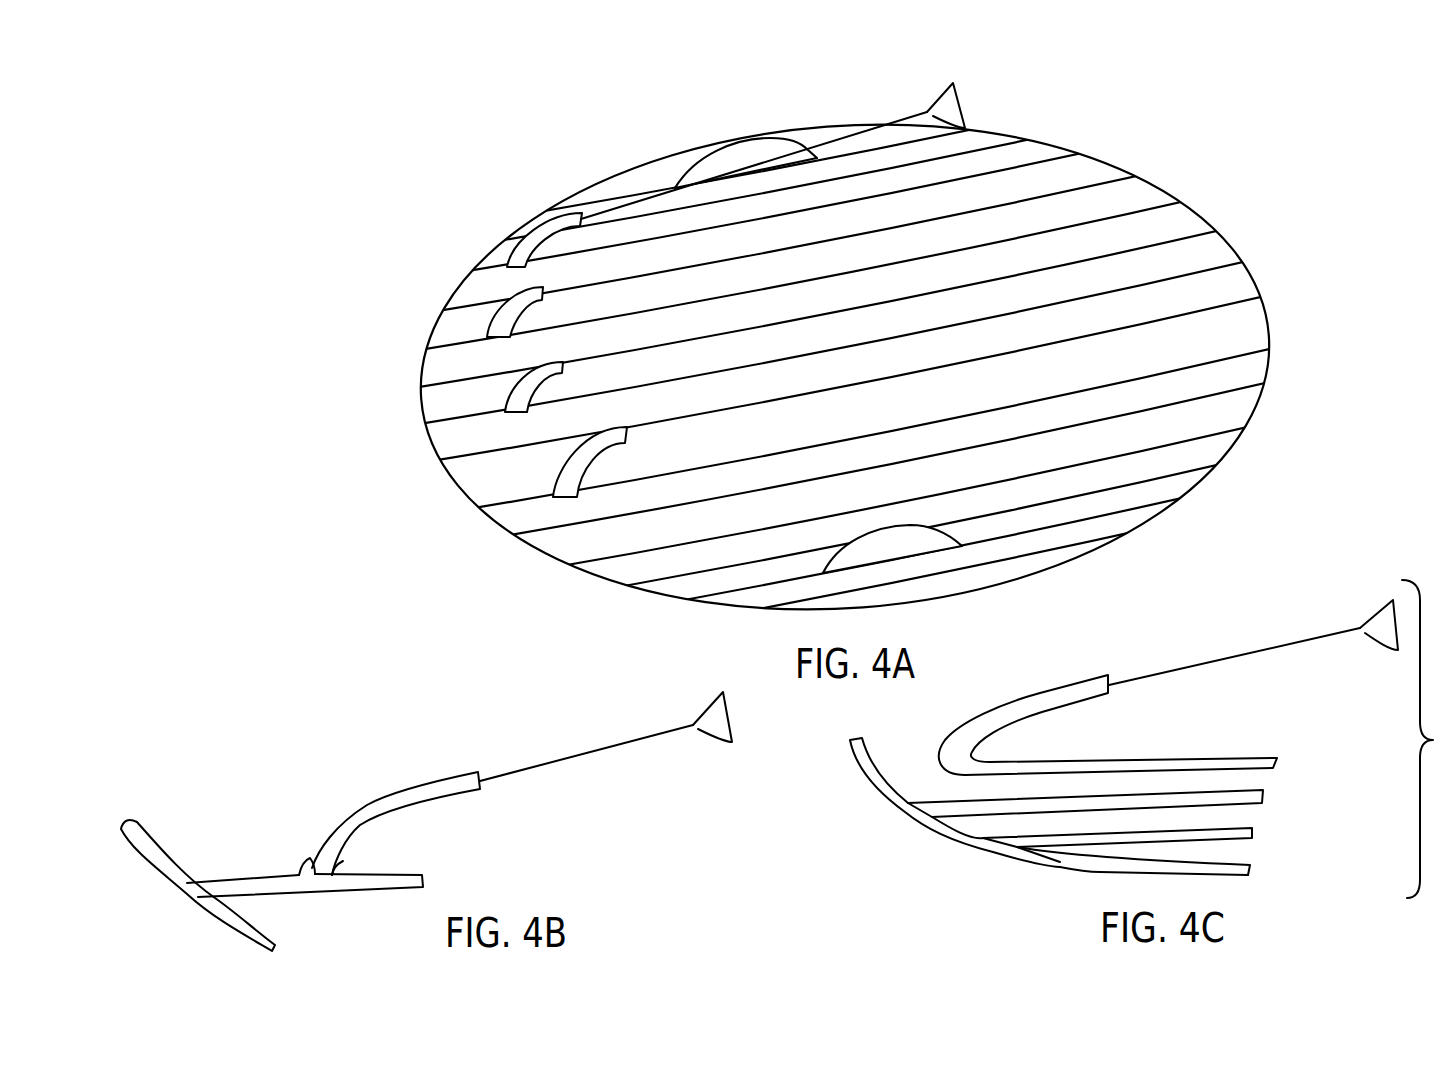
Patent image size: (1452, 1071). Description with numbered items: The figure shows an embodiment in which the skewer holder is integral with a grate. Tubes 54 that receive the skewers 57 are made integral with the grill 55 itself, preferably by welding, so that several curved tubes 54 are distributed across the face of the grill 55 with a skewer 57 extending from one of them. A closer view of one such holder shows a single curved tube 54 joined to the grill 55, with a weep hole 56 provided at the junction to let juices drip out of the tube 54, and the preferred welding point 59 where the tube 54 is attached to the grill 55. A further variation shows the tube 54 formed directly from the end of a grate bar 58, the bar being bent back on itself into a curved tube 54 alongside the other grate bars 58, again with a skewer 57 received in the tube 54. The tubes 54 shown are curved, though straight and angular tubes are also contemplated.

In FIG. 4A, the tube 54 is at (560, 213).
In FIG. 4B, the tube 54 is at (420, 785).
In FIG. 4C, the tube 54 is at (1067, 683).
In FIG. 4A, the grill 55 is at (632, 167).
In FIG. 4B, the grill 55 is at (195, 913).
In FIG. 4C, the grill 55 is at (993, 852).
In FIG. 4B, the weep hole 56 is at (305, 862).
In FIG. 4A, the skewer 57 is at (895, 118).
In FIG. 4B, the skewer 57 is at (660, 728).
In FIG. 4C, the skewer 57 is at (1253, 642).
In FIG. 4C, the grate bar 58 is at (1207, 757).
In FIG. 4B, the welding point 59 is at (341, 870).